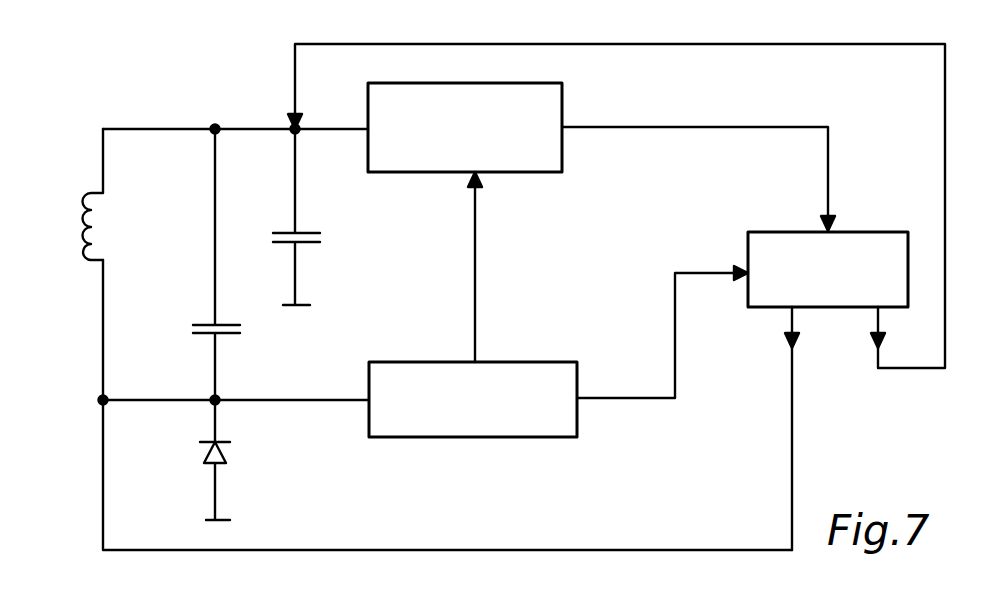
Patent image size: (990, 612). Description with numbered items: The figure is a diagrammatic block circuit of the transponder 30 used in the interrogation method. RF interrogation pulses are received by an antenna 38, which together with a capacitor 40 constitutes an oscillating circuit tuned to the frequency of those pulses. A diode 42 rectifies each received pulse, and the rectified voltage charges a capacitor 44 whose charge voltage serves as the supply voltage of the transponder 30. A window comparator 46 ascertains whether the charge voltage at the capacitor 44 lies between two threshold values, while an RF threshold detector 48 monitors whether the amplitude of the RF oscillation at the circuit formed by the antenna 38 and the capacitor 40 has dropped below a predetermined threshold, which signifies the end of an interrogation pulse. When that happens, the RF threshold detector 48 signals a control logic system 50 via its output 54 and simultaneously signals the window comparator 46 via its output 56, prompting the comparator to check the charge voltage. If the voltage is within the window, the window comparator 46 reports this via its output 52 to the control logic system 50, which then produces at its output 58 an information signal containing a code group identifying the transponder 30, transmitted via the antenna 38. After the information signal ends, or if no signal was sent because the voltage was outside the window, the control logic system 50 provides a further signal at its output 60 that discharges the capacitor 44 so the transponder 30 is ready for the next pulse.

The transponder 30 is at (852, 460).
The antenna 38 is at (90, 261).
The capacitor 40 is at (215, 326).
The diode 42 is at (215, 464).
The capacitor 44 is at (297, 238).
The window comparator 46 is at (552, 158).
The RF threshold detector 48 is at (572, 425).
The control logic system 50 is at (908, 208).
The output of the window comparator 52 is at (564, 126).
The output of the RF threshold detector 54 is at (578, 392).
The output of the RF threshold detector 56 is at (476, 346).
The output of the control logic 58 is at (795, 308).
The output of the control logic 60 is at (880, 308).